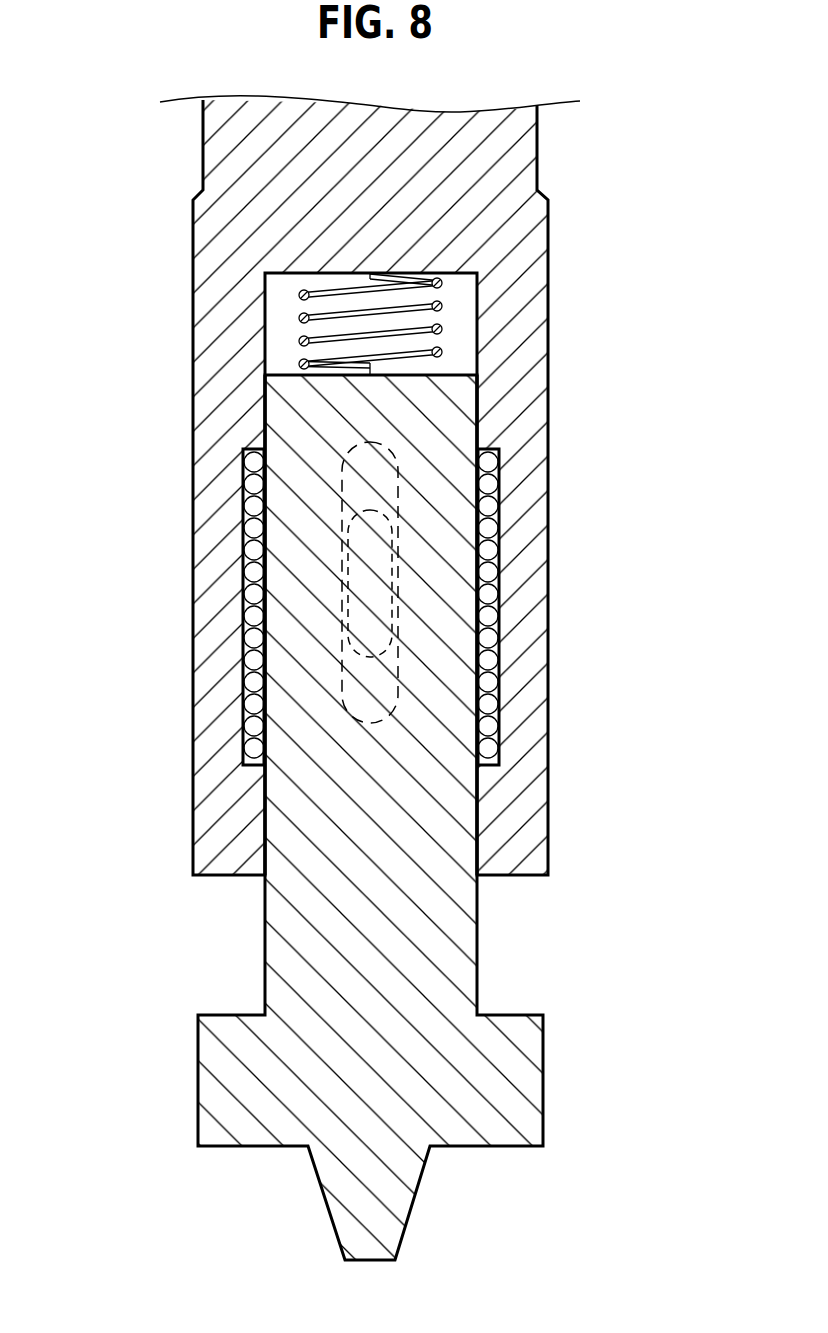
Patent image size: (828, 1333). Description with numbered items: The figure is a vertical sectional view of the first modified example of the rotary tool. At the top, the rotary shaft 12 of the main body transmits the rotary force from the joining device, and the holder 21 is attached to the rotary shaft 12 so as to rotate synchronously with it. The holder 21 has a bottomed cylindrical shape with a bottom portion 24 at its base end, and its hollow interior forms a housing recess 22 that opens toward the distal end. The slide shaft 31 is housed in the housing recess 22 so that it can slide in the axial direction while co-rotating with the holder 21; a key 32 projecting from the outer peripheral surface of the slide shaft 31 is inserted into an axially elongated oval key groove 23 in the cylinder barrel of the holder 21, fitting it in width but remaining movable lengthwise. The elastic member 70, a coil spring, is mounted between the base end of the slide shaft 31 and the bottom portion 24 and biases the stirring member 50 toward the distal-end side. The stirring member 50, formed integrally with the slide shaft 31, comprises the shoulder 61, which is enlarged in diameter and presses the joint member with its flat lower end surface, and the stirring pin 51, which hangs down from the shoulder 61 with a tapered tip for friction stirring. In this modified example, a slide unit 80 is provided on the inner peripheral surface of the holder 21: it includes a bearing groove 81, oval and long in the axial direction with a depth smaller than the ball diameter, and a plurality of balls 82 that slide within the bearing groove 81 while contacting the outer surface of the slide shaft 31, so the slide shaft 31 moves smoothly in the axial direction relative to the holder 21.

The rotary shaft 12 is at (473, 142).
The holder 21 is at (220, 385).
The housing recess 22 is at (470, 830).
The key groove 23 is at (245, 605).
The bottom portion 24 is at (382, 233).
The slide shaft 31 is at (315, 943).
The key 32 is at (362, 550).
The stirring member 50 is at (300, 1137).
The stirring pin 51 is at (340, 1175).
The shoulder 61 is at (235, 1075).
The elastic member 70 is at (443, 328).
The slide unit 80 is at (373, 613).
The bearing groove 81 is at (243, 677).
The balls 82 is at (253, 710).